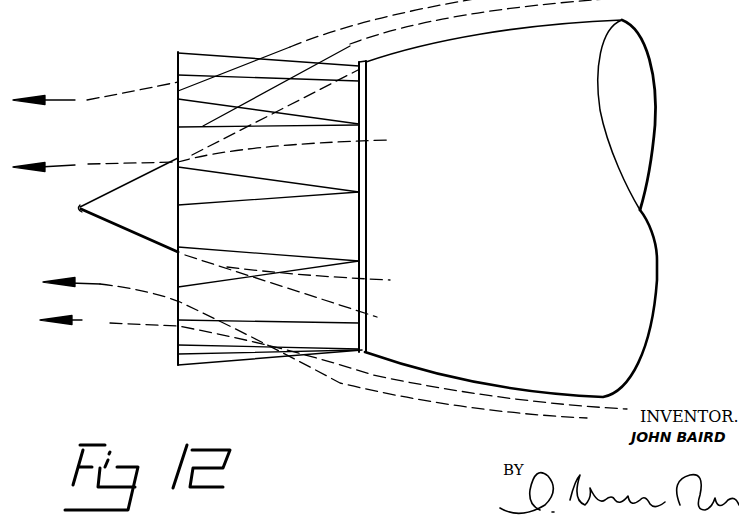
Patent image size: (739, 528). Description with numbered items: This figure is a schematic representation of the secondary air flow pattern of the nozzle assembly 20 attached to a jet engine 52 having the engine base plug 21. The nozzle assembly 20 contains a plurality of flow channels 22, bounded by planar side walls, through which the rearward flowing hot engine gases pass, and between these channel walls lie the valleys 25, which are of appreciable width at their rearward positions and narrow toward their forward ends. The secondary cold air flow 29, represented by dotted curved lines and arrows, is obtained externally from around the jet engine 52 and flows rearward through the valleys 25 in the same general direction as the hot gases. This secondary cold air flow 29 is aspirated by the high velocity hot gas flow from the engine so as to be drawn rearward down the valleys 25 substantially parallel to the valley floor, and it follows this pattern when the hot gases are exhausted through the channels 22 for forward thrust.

The nozzle assembly 20 is at (177, 51).
The engine base plug 21 is at (78, 212).
The flow channels 22 is at (178, 91).
The valleys 25 is at (178, 64).
The secondary cold air flow 29 is at (86, 100).
The jet engine 52 is at (537, 29).